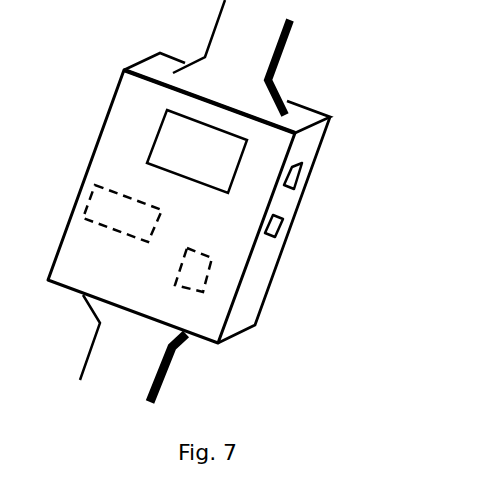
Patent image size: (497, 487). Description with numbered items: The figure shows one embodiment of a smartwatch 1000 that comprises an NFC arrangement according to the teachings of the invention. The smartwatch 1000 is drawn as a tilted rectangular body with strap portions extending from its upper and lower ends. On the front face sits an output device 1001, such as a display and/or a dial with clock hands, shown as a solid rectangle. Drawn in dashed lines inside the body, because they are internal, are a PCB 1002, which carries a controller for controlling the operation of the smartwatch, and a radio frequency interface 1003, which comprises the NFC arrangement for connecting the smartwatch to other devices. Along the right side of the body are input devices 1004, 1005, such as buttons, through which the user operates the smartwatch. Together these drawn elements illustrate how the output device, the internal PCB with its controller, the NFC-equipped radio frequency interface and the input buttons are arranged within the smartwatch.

The smartwatch 1000 is at (95, 109).
The output device 1001 is at (197, 151).
The PCB 1002 is at (108, 239).
The radio frequency interface 1003 is at (204, 243).
The input device 1004 is at (303, 178).
The input device 1005 is at (279, 231).